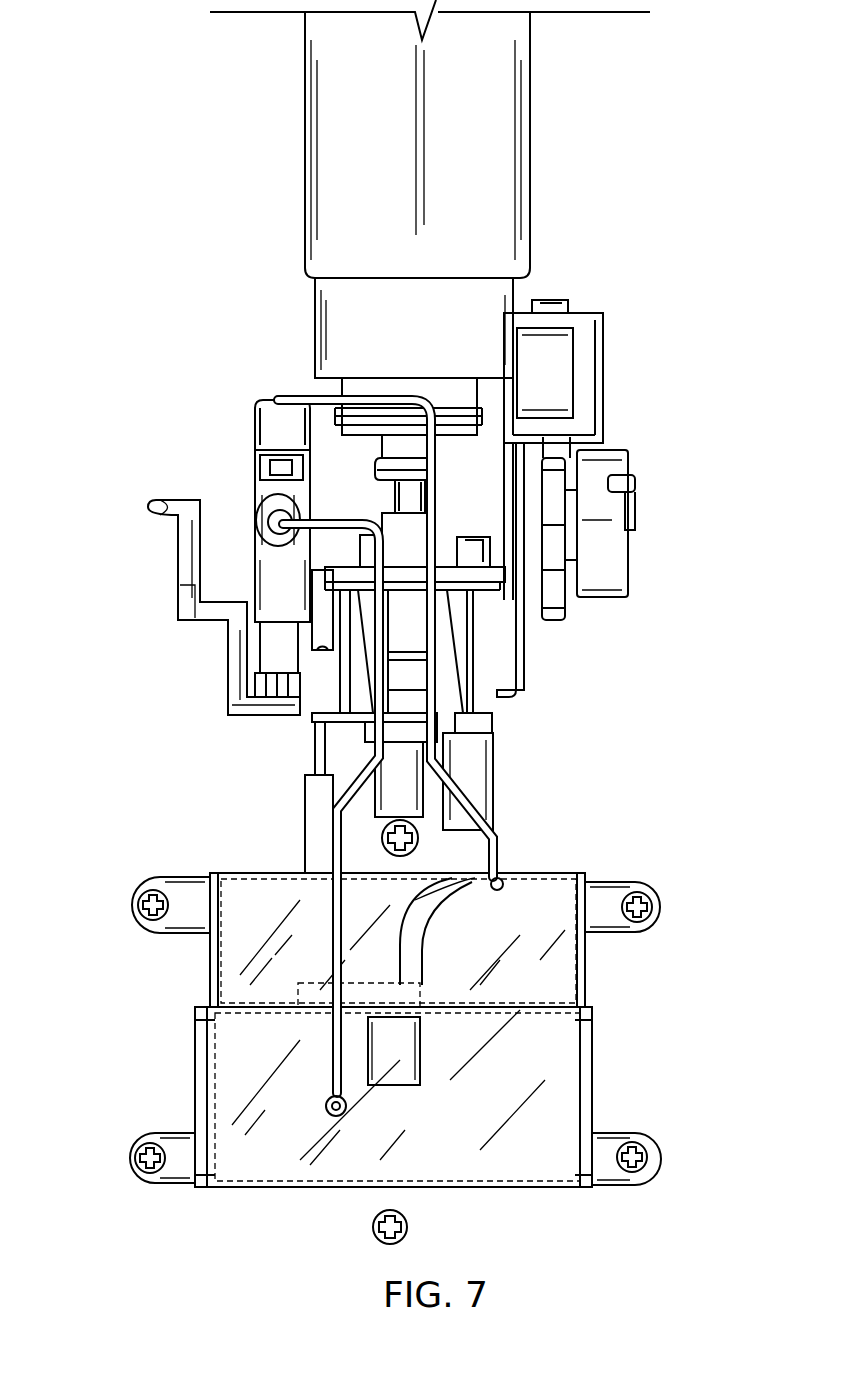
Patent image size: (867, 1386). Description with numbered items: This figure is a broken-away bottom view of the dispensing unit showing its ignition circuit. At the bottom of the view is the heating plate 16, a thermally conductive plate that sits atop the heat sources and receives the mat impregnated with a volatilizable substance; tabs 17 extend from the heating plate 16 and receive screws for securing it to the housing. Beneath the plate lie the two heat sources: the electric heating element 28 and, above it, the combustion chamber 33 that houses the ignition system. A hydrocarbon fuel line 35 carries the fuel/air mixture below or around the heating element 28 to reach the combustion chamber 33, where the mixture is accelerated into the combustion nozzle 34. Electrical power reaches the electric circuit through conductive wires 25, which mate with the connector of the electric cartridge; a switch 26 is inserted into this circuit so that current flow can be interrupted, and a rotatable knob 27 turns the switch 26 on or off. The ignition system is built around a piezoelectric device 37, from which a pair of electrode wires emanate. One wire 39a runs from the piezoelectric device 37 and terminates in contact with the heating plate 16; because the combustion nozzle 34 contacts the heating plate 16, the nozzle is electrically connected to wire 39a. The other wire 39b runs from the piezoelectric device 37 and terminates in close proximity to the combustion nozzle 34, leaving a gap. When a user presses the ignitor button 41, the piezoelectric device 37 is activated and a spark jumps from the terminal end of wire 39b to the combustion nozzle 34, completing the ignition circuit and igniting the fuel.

The heating plate 16 is at (558, 886).
The tabs 17 is at (666, 906).
The conductive wires 25 is at (521, 663).
The switch 26 is at (565, 366).
The rotatable knob 27 is at (612, 573).
The heating element 28 is at (480, 973).
The combustion chamber 33 is at (572, 1088).
The combustion nozzle 34 is at (400, 1068).
The hydrocarbon fuel line 35 is at (495, 778).
The piezoelectric device 37 is at (258, 406).
The first electrode wire 39a is at (310, 398).
The second electrode wire 39b is at (320, 519).
The ignitor button 41 is at (150, 502).